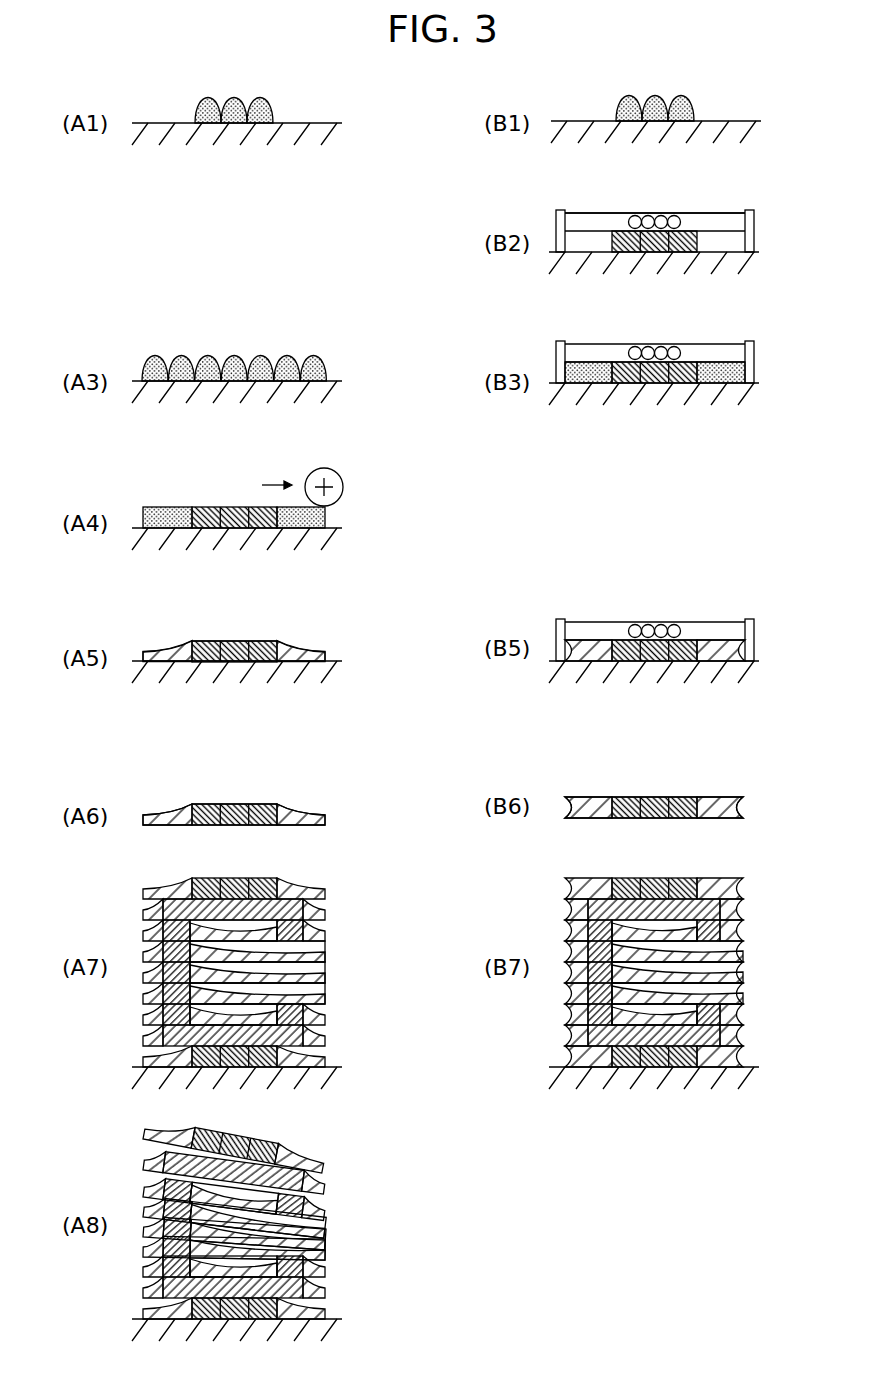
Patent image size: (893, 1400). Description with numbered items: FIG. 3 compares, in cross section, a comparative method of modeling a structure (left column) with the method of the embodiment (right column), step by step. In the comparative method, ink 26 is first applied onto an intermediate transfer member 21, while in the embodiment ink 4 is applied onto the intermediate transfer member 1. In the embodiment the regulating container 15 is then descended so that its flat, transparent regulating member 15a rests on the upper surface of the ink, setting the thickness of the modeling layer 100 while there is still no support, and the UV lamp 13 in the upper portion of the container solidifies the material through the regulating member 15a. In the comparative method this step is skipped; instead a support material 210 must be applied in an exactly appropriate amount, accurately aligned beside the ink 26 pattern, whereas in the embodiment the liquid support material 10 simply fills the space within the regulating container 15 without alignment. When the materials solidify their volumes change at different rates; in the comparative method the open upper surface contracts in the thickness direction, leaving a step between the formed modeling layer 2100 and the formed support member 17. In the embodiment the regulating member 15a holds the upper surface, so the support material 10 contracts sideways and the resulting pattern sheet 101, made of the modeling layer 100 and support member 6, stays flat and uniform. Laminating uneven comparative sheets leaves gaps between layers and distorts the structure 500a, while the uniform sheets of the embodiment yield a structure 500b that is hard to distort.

The intermediate transfer member 1 is at (735, 120).
The ink 4 is at (617, 113).
The support member 6 is at (716, 647).
The support material 10 is at (738, 373).
The UV lamp 13 is at (678, 220).
The regulating container 15 is at (755, 223).
The regulating member 15a is at (718, 215).
The support member 17 is at (312, 653).
The intermediate transfer member 21 is at (312, 122).
The ink 26 is at (260, 99).
The modeling layer 100 is at (618, 232).
The pattern sheet 101 is at (733, 747).
The support material 210 is at (311, 356).
The modeling layer 2100 is at (260, 639).
The structure 500a is at (356, 877).
The structure 500b is at (769, 877).